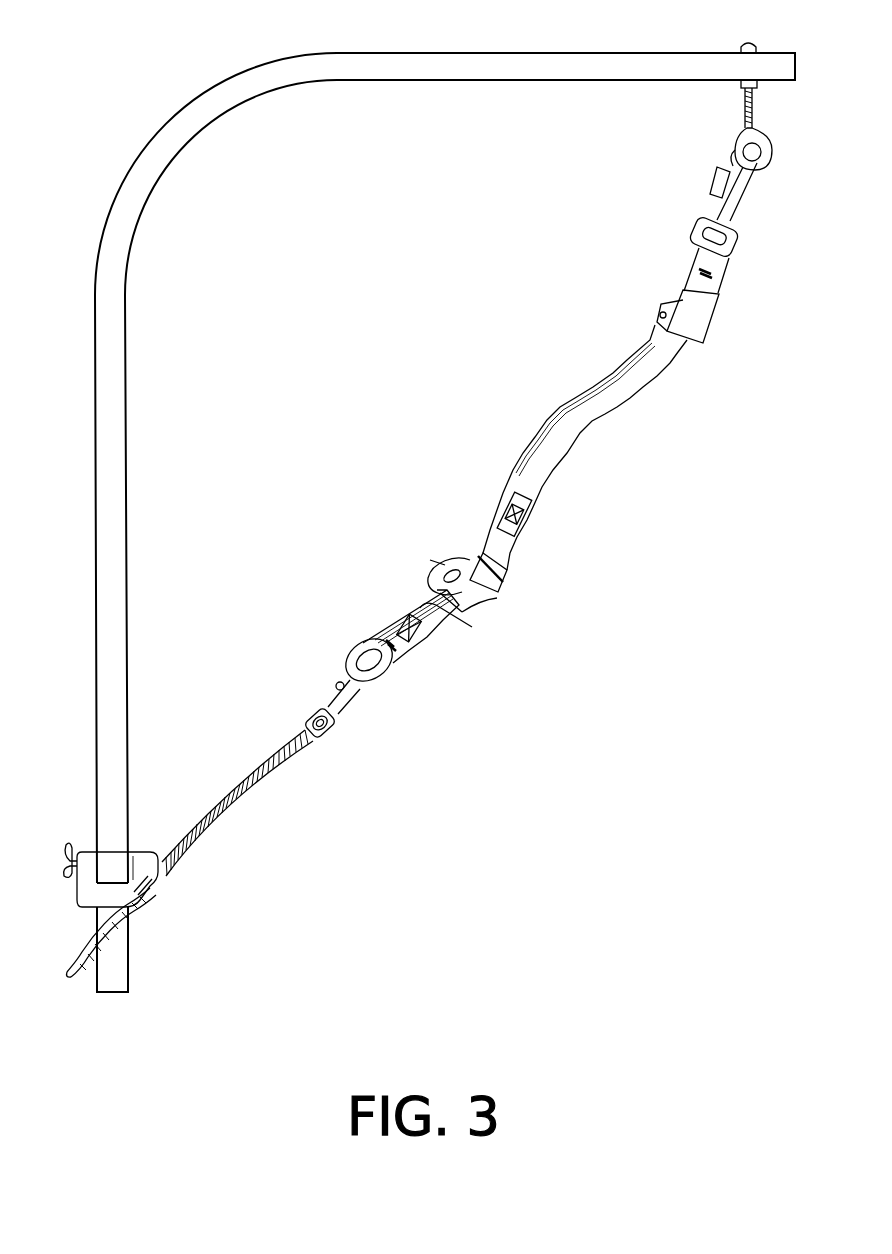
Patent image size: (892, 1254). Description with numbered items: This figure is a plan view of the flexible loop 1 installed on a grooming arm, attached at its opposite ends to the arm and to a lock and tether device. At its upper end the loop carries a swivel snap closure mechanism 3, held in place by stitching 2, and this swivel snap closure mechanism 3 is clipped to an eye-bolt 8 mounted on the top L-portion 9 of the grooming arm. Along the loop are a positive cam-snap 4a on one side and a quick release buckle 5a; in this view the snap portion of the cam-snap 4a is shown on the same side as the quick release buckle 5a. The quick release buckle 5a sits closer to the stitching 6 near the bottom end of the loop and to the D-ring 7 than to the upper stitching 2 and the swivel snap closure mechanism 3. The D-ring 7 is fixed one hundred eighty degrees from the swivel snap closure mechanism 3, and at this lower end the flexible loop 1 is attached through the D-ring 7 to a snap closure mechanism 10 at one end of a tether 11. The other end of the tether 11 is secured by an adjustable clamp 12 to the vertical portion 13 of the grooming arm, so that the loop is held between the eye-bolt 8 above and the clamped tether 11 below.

The flexible loop 1 is at (567, 432).
The stitching 2 is at (721, 276).
The swivel snap closure mechanism 3 is at (722, 240).
The cam-snap 4a is at (700, 313).
The quick release buckle 5a is at (494, 598).
The stitching 6 is at (398, 650).
The D-ring 7 is at (346, 648).
The eye-bolt 8 is at (736, 141).
The top L-portion 9 is at (572, 82).
The snap closure mechanism 10 is at (356, 692).
The tether 11 is at (250, 800).
The adjustable clamp 12 is at (152, 882).
The vertical portion 13 is at (129, 358).